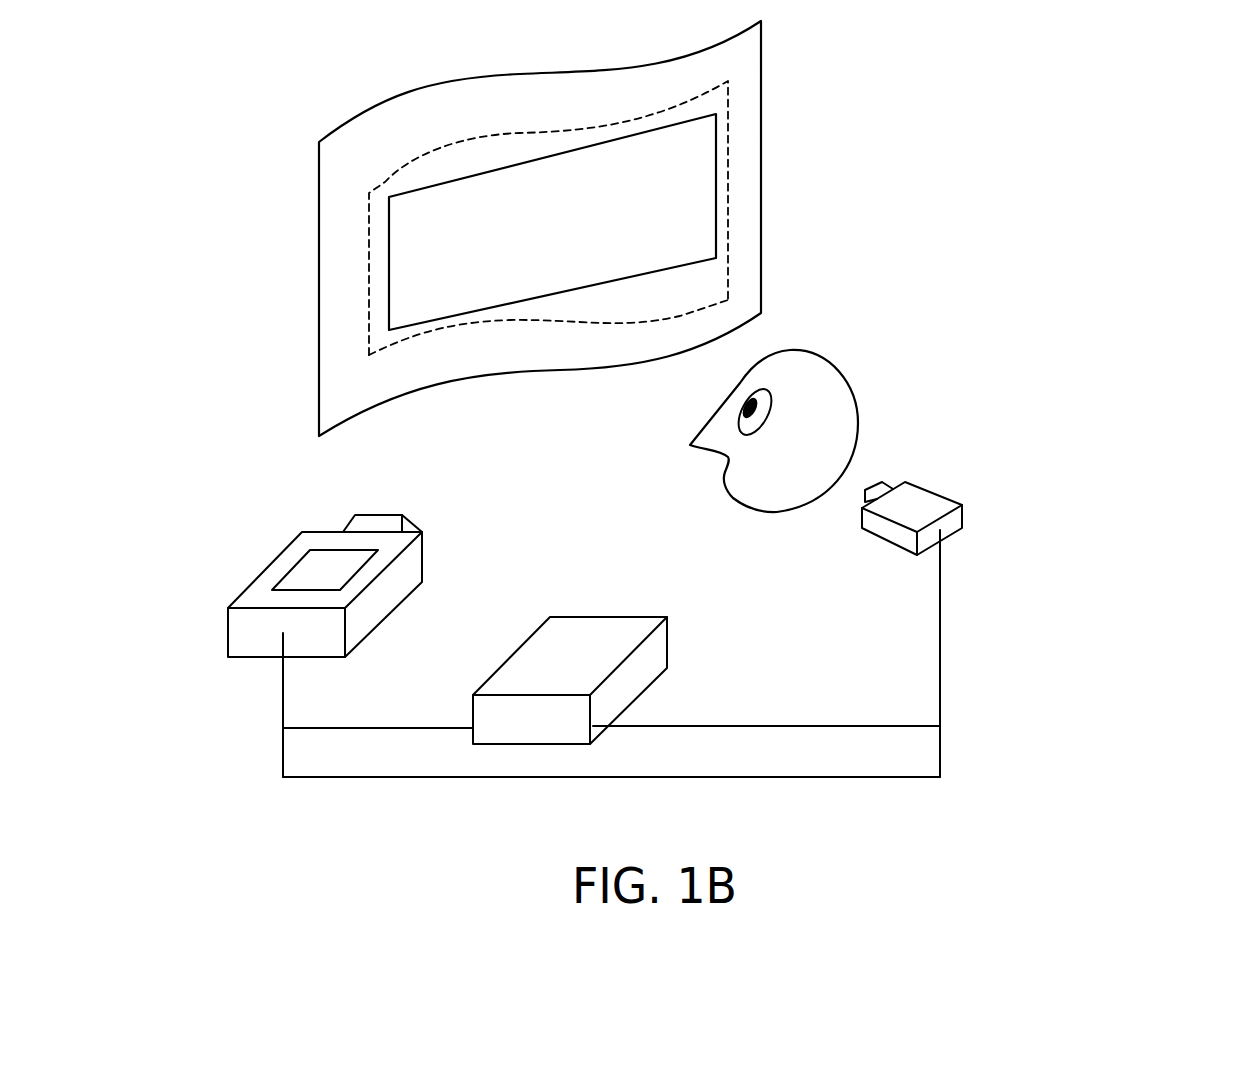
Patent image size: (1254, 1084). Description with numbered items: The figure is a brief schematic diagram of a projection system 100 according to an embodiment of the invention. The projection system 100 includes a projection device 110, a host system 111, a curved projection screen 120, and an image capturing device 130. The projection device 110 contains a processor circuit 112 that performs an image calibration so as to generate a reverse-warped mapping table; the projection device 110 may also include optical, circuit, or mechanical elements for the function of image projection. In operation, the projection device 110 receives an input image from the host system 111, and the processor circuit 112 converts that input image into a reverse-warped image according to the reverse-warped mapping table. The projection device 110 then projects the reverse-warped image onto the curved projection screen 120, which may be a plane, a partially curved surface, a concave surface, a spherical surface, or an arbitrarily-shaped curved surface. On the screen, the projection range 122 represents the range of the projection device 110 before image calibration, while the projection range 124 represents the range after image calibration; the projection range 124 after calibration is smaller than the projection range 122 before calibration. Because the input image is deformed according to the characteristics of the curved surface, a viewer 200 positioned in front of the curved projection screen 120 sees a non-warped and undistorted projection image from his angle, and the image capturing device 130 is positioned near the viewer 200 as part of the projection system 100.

The projection system 100 is at (1208, 771).
The projection device 110 is at (228, 605).
The host system 111 is at (527, 650).
The processor circuit 112 is at (292, 567).
The curved projection screen 120 is at (535, 72).
The projection range 122 is at (369, 275).
The projection range after image calibration 124 is at (717, 183).
The image capturing device 130 is at (933, 493).
The viewer 200 is at (810, 352).